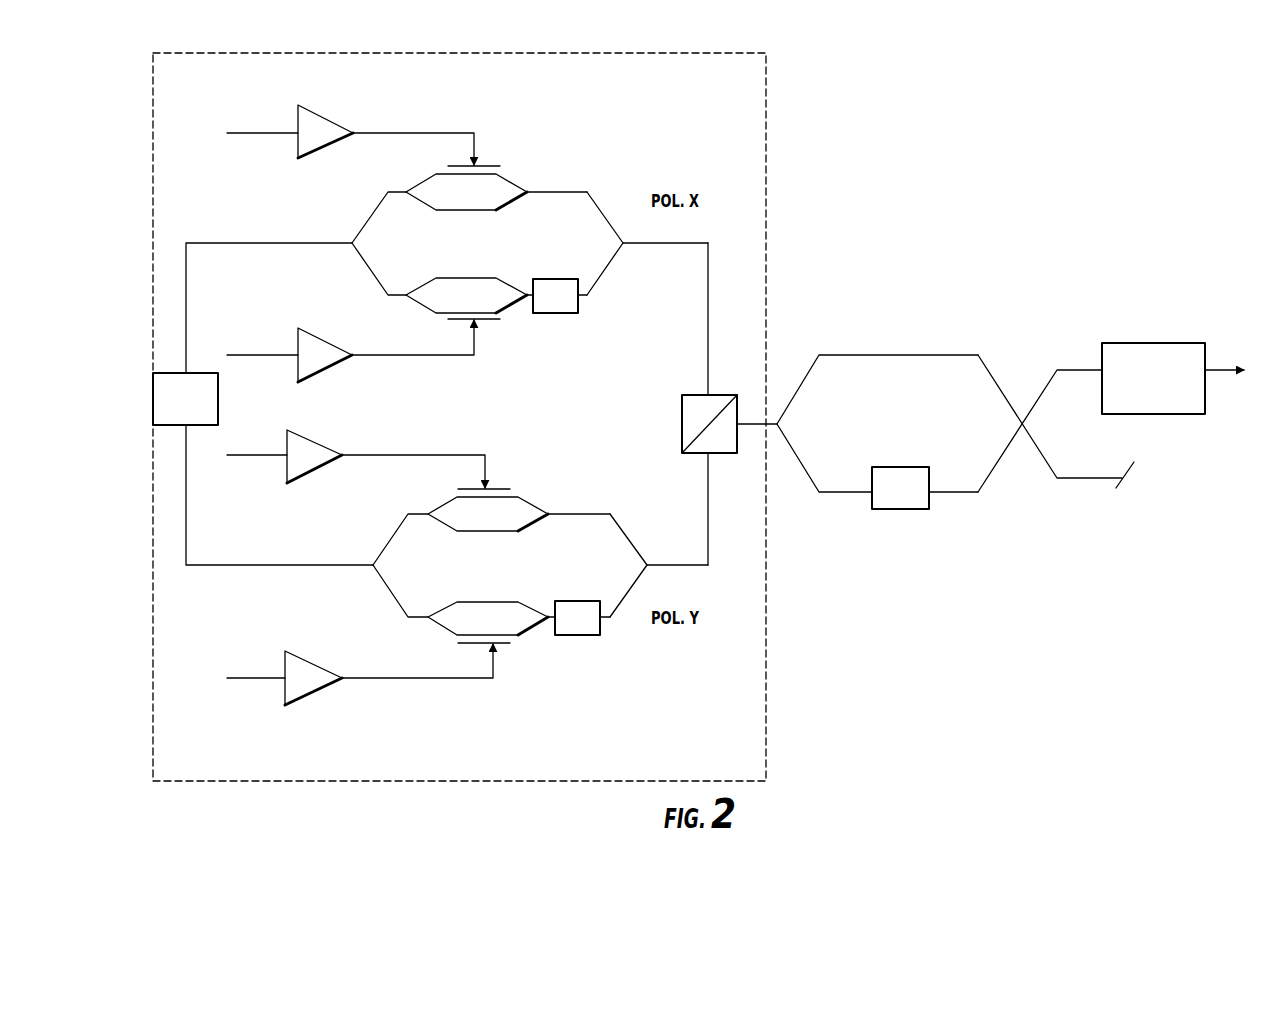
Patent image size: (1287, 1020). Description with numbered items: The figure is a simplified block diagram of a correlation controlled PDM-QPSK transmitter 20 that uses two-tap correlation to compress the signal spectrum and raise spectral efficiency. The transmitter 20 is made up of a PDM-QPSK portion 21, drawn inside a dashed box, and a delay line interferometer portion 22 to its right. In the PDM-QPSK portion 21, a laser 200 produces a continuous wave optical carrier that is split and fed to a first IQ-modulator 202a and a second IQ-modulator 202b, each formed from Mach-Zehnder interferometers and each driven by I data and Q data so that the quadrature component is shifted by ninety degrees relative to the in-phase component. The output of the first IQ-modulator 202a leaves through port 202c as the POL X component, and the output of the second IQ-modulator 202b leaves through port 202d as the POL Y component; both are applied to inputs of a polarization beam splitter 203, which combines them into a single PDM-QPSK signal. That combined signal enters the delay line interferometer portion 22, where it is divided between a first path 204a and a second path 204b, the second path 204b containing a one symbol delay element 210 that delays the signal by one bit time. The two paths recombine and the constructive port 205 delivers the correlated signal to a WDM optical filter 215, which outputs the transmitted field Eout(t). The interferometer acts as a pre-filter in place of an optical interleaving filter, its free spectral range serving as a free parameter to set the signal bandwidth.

The transmitter 20 is at (1060, 108).
The PDM-QPSK portion 21 is at (766, 97).
The delay line interferometer portion 22 is at (1032, 467).
The laser 200 is at (218, 395).
The first IQ-modulator 202a is at (516, 148).
The second IQ-modulator 202b is at (539, 488).
The port 202c is at (640, 251).
The port 202d is at (672, 565).
The polarization beam splitter 203 is at (720, 395).
The first path 204a is at (897, 356).
The second path 204b is at (843, 493).
The constructive port 205 is at (1075, 370).
The one symbol delay element 210 is at (917, 510).
The WDM optical filter 215 is at (1151, 343).